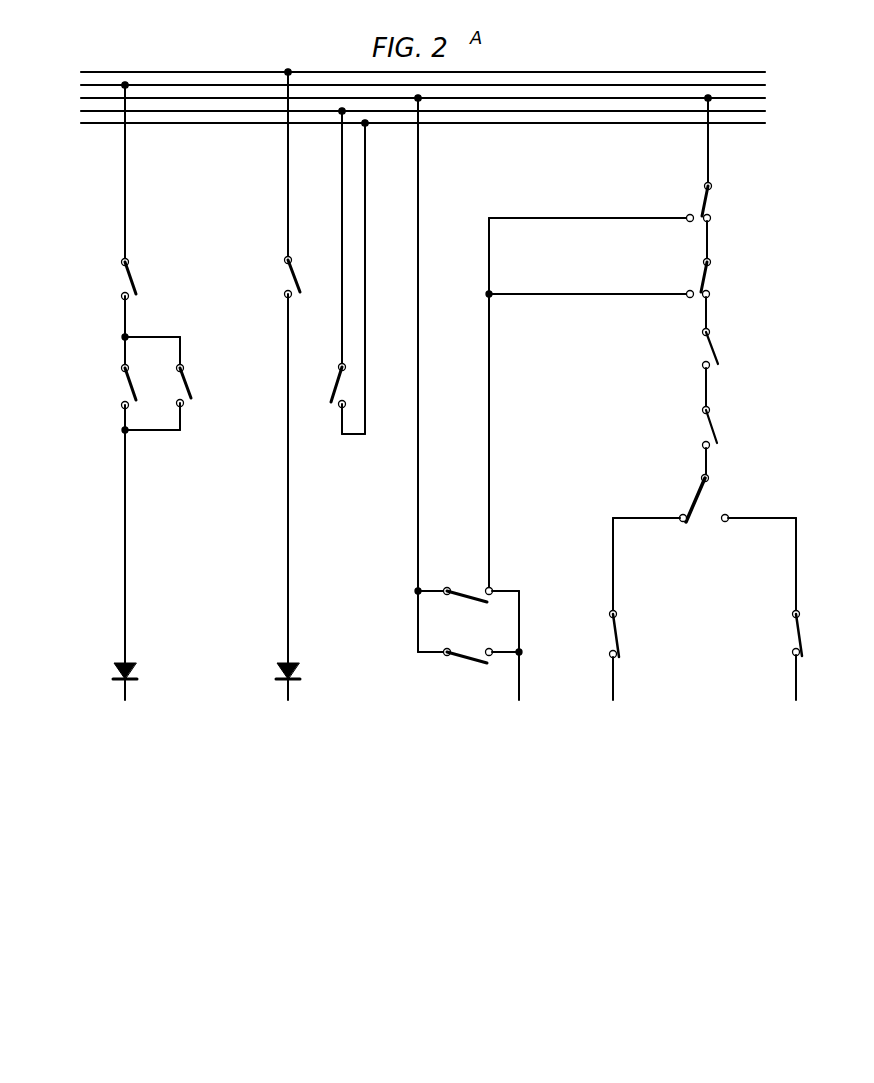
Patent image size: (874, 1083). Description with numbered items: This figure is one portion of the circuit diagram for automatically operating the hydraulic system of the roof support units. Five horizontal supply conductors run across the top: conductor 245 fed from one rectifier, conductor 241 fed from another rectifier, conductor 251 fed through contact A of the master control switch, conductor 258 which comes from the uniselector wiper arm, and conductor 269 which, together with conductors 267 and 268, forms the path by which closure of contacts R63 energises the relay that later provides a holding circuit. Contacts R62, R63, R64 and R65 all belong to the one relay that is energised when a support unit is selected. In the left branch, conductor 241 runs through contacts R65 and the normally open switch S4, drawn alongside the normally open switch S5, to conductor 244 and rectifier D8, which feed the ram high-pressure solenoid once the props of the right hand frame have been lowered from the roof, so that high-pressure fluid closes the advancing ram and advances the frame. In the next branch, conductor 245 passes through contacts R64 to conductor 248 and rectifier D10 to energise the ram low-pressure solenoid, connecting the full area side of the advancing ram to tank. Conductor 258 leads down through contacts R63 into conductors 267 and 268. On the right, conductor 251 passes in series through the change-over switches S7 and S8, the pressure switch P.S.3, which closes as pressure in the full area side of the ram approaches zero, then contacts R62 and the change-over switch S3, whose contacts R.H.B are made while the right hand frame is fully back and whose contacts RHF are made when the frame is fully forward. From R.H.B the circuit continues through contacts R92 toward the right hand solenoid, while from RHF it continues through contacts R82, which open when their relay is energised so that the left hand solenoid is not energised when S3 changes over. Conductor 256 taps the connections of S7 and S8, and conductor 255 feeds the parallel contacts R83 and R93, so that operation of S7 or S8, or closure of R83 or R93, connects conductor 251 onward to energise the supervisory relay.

The conductor 241 is at (172, 87).
The conductor 245 is at (262, 74).
The conductor 251 is at (588, 100).
The conductor 258 is at (315, 112).
The conductor 269 is at (446, 124).
The conductor 267 is at (341, 208).
The conductor 268 is at (366, 195).
The conductor 255 is at (418, 348).
The conductor 256 is at (490, 383).
The conductor 244 is at (150, 514).
The conductor 248 is at (312, 490).
The contacts of relay R6 R65 is at (138, 282).
The contacts of relay R6 R64 is at (314, 277).
The contacts of relay R6 R63 is at (330, 399).
The contacts of relay R6 R62 is at (712, 424).
The switch S4 is at (126, 385).
The switch S5 is at (190, 380).
The change-over switch S7 is at (714, 223).
The change-over switch S8 is at (714, 296).
The change-over switch S3 is at (704, 495).
The pressure switch P.S.3 is at (714, 352).
The contacts of switch S3 R.H.B is at (651, 508).
The contacts of switch S3 RHF is at (759, 530).
The contacts of relay R8 R83 is at (474, 586).
The contacts of relay R9 R93 is at (482, 648).
The contacts of relay R9 R92 is at (614, 636).
The contacts of relay R8 R82 is at (818, 622).
The rectifier D8 is at (138, 655).
The rectifier D10 is at (301, 655).